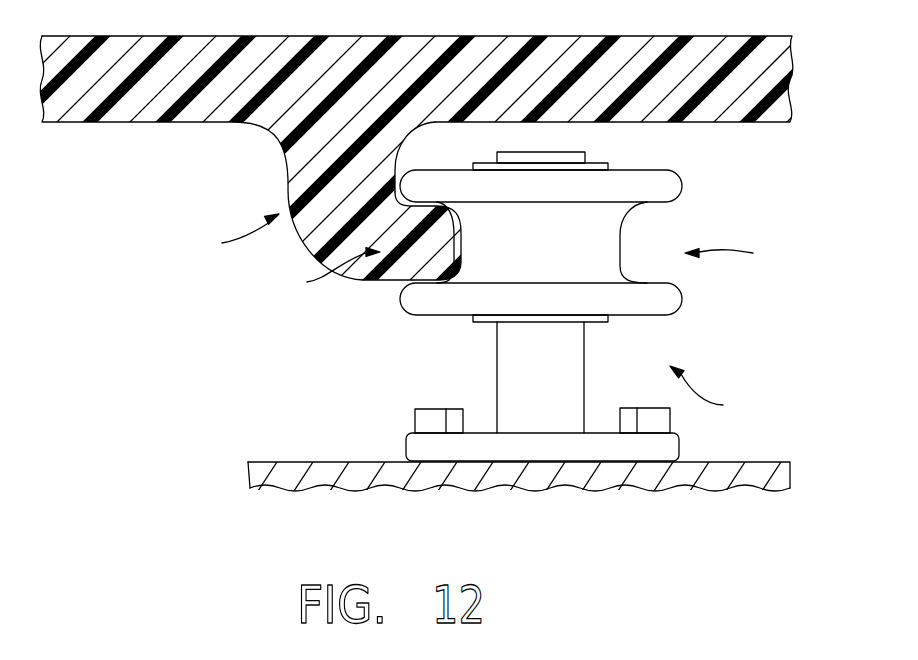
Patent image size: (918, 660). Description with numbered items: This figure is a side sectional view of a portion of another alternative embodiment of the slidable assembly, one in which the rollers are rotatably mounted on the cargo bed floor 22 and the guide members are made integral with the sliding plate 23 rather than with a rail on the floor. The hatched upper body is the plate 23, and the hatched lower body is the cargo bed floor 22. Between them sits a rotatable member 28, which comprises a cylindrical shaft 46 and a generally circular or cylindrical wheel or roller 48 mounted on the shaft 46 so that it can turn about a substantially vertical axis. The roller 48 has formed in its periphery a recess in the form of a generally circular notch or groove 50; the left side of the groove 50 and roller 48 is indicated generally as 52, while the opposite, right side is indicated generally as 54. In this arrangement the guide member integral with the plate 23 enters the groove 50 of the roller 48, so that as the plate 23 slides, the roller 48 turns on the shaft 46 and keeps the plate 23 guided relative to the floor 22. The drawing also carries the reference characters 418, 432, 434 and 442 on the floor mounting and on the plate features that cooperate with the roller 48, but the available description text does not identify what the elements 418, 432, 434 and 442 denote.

The cargo bed floor 22 is at (733, 460).
The plate 23 is at (459, 152).
The rotatable member 28 is at (713, 392).
The cylindrical shaft 46 is at (566, 377).
The roller 48 is at (447, 303).
The groove 50 is at (527, 251).
The left side of groove 52 is at (326, 274).
The right side of groove 54 is at (739, 257).
The guide channel 418 is at (227, 237).
The mounting base 432 is at (545, 448).
The guide flange 434 is at (369, 201).
The retaining lip 442 is at (423, 247).